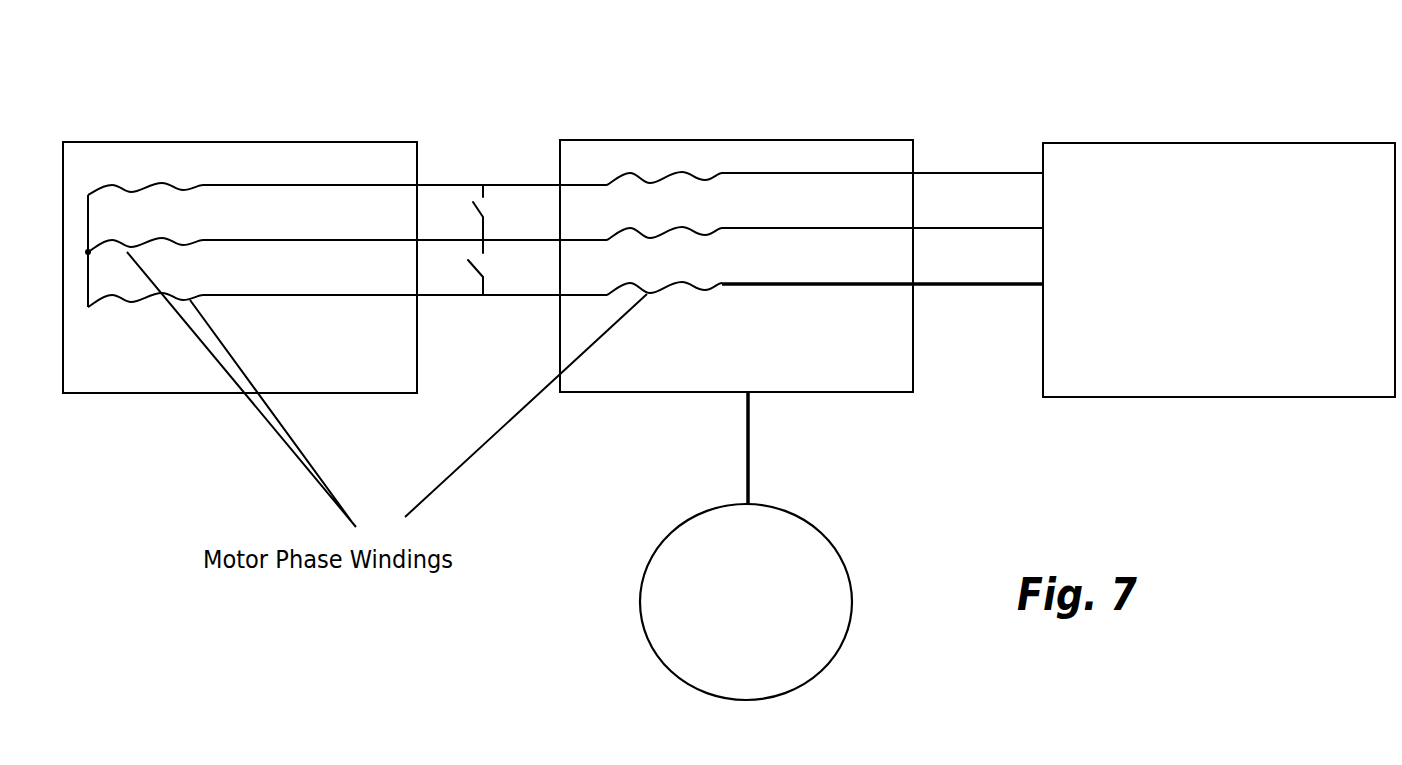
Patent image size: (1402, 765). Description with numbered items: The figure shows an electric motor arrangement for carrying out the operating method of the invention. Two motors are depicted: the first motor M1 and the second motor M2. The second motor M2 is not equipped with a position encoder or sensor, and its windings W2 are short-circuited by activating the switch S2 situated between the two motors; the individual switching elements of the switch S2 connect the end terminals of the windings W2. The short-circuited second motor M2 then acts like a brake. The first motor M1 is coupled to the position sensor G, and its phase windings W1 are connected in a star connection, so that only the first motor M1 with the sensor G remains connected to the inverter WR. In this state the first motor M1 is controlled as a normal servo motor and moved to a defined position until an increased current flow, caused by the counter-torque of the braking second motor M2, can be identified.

The second motor M2 is at (267, 100).
The first motor M1 is at (781, 68).
The switch S2 is at (485, 218).
The windings W2 is at (166, 245).
The phase windings W1 is at (825, 233).
The inverter WR is at (1219, 270).
The position sensor G is at (746, 546).